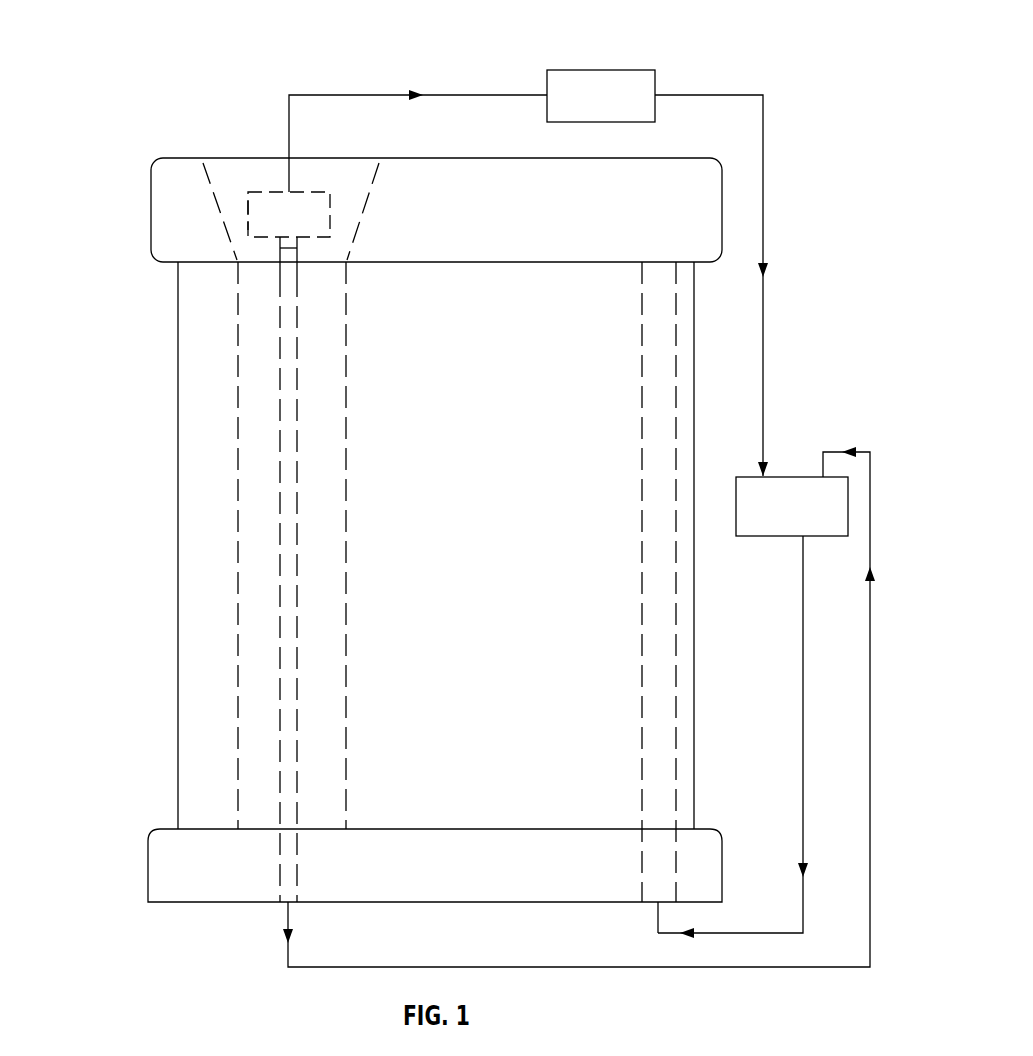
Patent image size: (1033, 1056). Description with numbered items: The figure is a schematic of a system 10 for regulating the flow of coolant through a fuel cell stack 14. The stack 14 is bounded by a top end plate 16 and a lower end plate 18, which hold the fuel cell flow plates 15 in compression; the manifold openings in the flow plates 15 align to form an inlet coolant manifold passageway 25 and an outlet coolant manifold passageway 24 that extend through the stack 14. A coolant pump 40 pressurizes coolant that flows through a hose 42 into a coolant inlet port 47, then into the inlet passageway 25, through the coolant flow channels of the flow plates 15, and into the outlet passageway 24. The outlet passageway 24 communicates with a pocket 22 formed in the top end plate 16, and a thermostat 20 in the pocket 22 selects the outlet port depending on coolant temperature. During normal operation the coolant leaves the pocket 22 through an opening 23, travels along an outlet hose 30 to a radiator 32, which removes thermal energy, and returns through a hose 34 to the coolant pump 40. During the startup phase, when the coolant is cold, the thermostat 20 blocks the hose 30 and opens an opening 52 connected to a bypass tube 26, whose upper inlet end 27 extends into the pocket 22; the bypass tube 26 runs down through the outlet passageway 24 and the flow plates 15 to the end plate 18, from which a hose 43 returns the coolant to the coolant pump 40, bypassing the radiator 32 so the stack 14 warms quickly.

The system 10 is at (172, 92).
The fuel cell stack 14 is at (103, 157).
The flow plates 15 is at (147, 270).
The top end plate 16 is at (665, 158).
The end plate 18 is at (707, 829).
The thermostat 20 is at (247, 215).
The pocket 22 is at (343, 162).
The opening 23 is at (262, 192).
The outlet coolant manifold passageway 24 is at (237, 390).
The inlet coolant manifold passageway 25 is at (676, 357).
The bypass tube 26 is at (283, 315).
The upper inlet end 27 is at (280, 248).
The outlet hose 30 is at (450, 93).
The radiator 32 is at (611, 69).
The hose 34 is at (763, 232).
The coolant pump 40 is at (789, 476).
The hose 42 is at (737, 933).
The hose 43 is at (645, 967).
The coolant inlet port 47 is at (650, 902).
The opening 52 is at (288, 257).